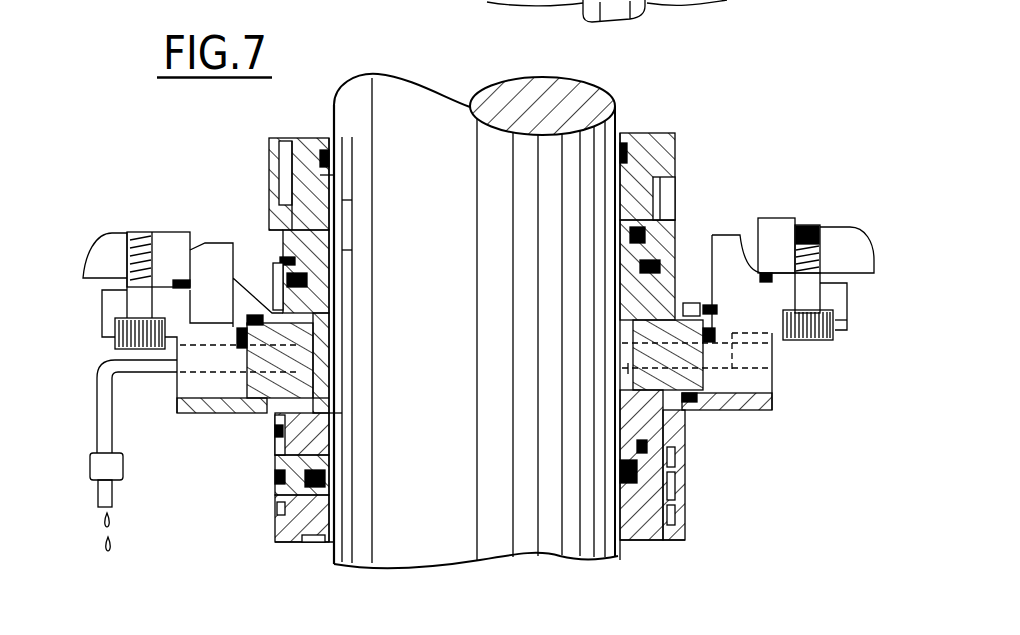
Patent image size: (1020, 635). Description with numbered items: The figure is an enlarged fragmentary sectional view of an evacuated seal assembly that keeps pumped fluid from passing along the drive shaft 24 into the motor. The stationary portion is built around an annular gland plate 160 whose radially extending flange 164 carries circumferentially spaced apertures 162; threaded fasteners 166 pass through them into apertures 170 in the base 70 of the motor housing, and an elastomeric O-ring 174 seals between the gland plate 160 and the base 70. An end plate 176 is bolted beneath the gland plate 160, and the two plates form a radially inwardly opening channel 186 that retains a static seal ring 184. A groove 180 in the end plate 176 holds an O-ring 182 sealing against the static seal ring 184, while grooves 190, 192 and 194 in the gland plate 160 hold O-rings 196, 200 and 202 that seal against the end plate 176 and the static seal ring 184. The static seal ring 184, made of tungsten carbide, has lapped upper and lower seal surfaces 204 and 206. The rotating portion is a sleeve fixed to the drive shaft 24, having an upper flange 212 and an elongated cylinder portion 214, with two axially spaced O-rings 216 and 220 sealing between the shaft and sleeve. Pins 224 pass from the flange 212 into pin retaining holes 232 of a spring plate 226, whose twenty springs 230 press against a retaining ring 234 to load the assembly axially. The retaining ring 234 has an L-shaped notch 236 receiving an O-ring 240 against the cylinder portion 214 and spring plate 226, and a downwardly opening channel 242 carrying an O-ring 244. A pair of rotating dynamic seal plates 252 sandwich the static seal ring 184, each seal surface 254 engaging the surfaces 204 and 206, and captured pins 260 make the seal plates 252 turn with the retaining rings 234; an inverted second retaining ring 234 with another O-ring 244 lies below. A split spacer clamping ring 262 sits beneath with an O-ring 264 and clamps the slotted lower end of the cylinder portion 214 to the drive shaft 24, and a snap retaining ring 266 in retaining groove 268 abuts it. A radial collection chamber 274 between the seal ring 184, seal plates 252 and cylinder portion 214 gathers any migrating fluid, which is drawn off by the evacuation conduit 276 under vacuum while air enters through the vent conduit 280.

The drive shaft 24 is at (433, 125).
The base 70 is at (837, 232).
The gland plate 160 is at (777, 340).
The apertures 162 is at (817, 294).
The radially extending flange 164 is at (837, 327).
The threaded fasteners 166 is at (817, 342).
The apertures 170 is at (812, 226).
The elastomeric O-ring 174 is at (742, 236).
The end plate 176 is at (730, 405).
The groove 180 is at (703, 412).
The elastomeric O-ring 182 is at (693, 412).
The static seal ring 184 is at (228, 352).
The radially inwardly opening channel 186 is at (770, 397).
The groove 190 is at (720, 413).
The groove 192 is at (707, 313).
The groove 194 is at (697, 300).
The elastomeric O-ring 196 is at (717, 417).
The elastomeric O-ring 200 is at (704, 318).
The elastomeric O-ring 202 is at (687, 305).
The upper seal surface 204 is at (332, 282).
The lower seal surface 206 is at (335, 400).
The upper flange 212 is at (330, 135).
The cylinder portion 214 is at (335, 413).
The O-ring 216 is at (336, 140).
The O-ring 220 is at (338, 473).
The pins 224 is at (277, 135).
The spring plate 226 is at (297, 138).
The springs 230 is at (262, 240).
The pin retaining holes 232 is at (335, 178).
The retaining ring 234 is at (275, 256).
The L-shaped notch 236 is at (340, 228).
The O-ring 240 is at (347, 203).
The downwardly opening channel 242 is at (347, 250).
The O-ring 244 is at (330, 275).
The rotating dynamic seal plates 252 is at (268, 262).
The seal surface 254 is at (340, 325).
The pins 260 is at (285, 268).
The spacer clamping ring 262 is at (275, 527).
The O-ring 264 is at (335, 493).
The snap retaining ring 266 is at (305, 540).
The retaining groove 268 is at (642, 530).
The radial collection chamber 274 is at (330, 352).
The evacuation conduit 276 is at (185, 383).
The vent conduit 280 is at (628, 369).